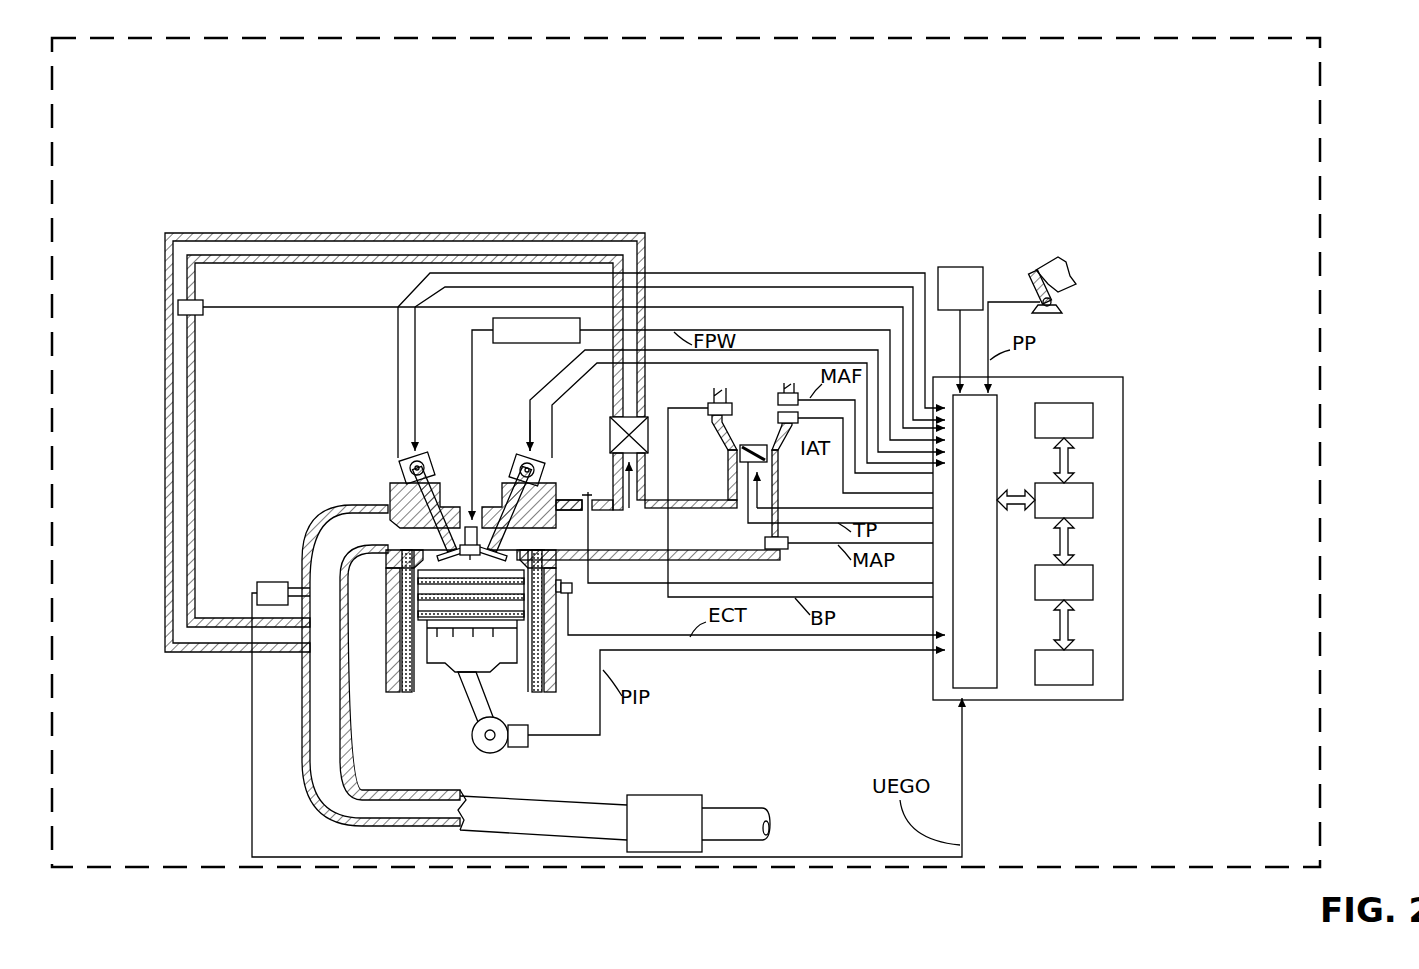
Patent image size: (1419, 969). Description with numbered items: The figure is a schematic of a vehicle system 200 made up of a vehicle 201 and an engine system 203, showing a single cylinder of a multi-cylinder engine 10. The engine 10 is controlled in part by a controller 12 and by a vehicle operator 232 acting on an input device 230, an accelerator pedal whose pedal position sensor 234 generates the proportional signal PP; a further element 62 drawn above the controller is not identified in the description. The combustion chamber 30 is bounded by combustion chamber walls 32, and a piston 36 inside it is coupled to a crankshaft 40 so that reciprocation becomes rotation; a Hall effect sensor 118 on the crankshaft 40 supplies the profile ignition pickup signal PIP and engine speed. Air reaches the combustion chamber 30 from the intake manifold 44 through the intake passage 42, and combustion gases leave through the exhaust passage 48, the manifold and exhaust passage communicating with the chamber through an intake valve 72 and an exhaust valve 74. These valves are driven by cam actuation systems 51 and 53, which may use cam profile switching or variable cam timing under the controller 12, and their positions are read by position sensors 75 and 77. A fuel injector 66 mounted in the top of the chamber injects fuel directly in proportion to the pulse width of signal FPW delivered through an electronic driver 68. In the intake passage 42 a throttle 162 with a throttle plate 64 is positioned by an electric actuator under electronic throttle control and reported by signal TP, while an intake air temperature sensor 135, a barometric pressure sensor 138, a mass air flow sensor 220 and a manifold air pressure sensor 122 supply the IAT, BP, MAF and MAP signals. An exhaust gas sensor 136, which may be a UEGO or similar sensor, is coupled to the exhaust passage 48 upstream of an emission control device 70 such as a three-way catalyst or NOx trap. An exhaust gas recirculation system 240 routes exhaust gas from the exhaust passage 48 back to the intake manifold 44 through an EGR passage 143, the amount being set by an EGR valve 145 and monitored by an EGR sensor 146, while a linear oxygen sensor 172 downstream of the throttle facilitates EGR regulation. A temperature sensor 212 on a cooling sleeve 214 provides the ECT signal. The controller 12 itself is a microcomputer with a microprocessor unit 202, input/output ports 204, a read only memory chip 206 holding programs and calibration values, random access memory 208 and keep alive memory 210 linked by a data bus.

The vehicle system 200 is at (1345, 85).
The vehicle 201 is at (1322, 508).
The engine system 203 is at (860, 244).
The engine 10 is at (332, 444).
The controller 12 is at (1120, 378).
The combustion chamber 30 is at (402, 650).
The combustion chamber walls 32 is at (412, 690).
The piston 36 is at (460, 672).
The crankshaft 40 is at (480, 750).
The intake passage 42 is at (753, 441).
The intake manifold 44 is at (654, 487).
The exhaust passage 48 is at (464, 672).
The cam actuation system 51 is at (520, 462).
The cam actuation system 53 is at (425, 462).
The driver demand input 62 is at (960, 330).
The throttle plate 64 is at (742, 452).
The fuel injector 66 is at (475, 505).
The electronic driver 68 is at (550, 345).
The emission control device 70 is at (698, 823).
The intake valve 72 is at (517, 545).
The exhaust valve 74 is at (430, 545).
The position sensor 75 is at (543, 474).
The position sensor 77 is at (408, 463).
The Hall effect sensor 118 is at (525, 747).
The manifold air pressure sensor 122 is at (790, 549).
The intake air temperature sensor 135 is at (778, 418).
The exhaust gas sensor 136 is at (257, 588).
The barometric pressure sensor 138 is at (708, 408).
The EGR passage 143 is at (173, 304).
The EGR valve 145 is at (608, 436).
The EGR sensor 146 is at (203, 311).
The throttle 162 is at (770, 455).
The linear oxygen sensor 172 is at (592, 510).
The microprocessor unit 202 is at (1093, 498).
The input/output ports 204 is at (1000, 408).
The read only memory chip 206 is at (1093, 418).
The random access memory 208 is at (1093, 583).
The keep alive memory 210 is at (1093, 668).
The temperature sensor 212 is at (573, 594).
The cooling sleeve 214 is at (552, 660).
The mass air flow sensor 220 is at (779, 396).
The input device 230 is at (1040, 282).
The vehicle operator 232 is at (1078, 268).
The pedal position sensor 234 is at (1065, 308).
The exhaust gas recirculation system 240 is at (520, 228).